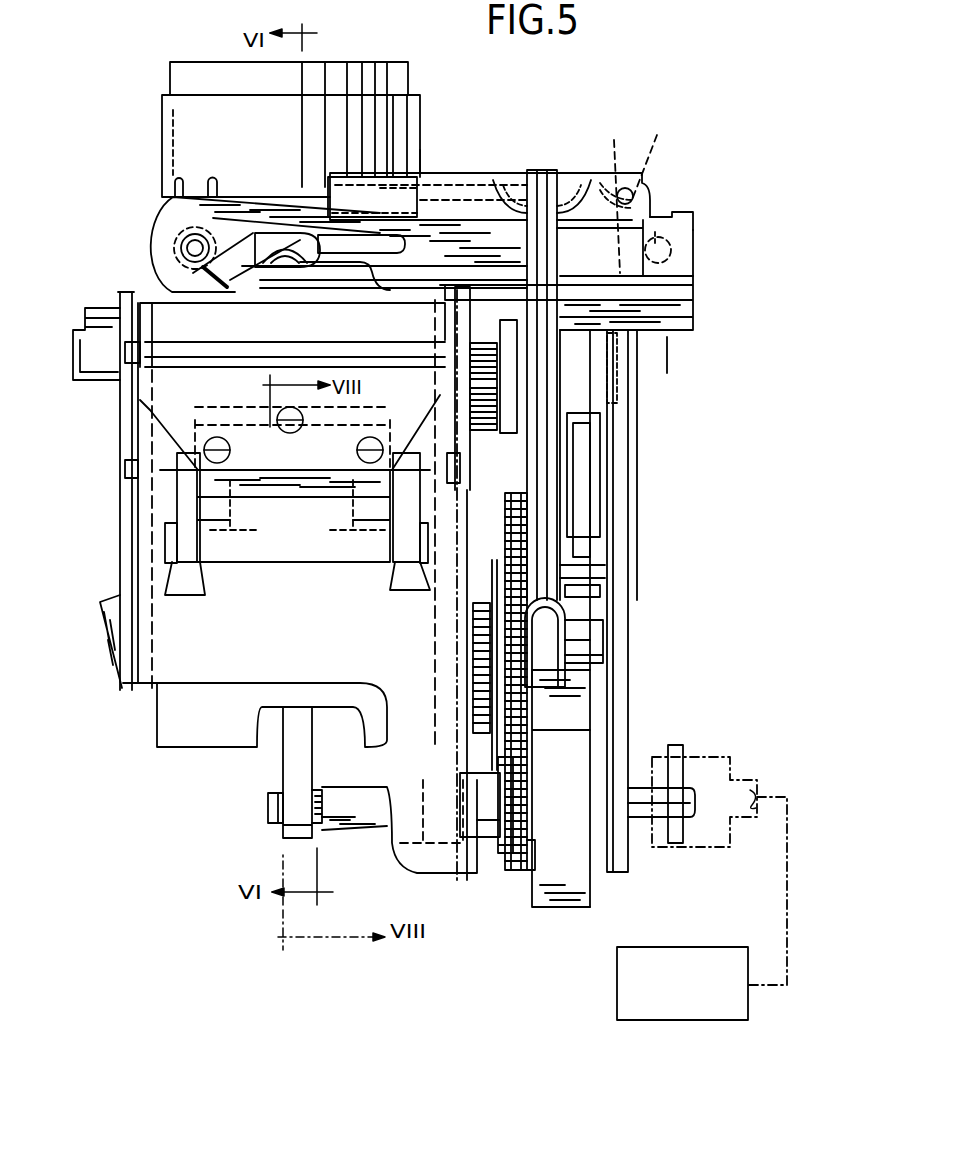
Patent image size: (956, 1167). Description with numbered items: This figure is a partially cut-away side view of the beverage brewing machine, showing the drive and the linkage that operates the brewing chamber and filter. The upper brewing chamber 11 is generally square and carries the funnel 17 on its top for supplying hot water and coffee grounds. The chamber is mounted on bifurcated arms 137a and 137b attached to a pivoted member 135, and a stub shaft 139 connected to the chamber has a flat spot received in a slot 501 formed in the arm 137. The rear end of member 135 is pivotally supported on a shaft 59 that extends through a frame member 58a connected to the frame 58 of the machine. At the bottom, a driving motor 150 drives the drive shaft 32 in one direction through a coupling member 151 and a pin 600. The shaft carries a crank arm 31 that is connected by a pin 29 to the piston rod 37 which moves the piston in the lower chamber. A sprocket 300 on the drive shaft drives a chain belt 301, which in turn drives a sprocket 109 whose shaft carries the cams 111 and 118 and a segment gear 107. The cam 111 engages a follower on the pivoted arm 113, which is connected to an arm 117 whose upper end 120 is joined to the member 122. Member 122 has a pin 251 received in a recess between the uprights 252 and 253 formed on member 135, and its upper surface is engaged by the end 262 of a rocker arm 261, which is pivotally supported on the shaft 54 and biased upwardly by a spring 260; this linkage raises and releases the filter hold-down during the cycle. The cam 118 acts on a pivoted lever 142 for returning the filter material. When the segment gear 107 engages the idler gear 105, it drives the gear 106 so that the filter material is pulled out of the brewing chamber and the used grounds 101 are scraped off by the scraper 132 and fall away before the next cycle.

The funnel 17 is at (388, 66).
The upper brewing chamber 11 is at (405, 110).
The end of rocker arm 262 is at (430, 157).
The member 122 is at (445, 182).
The arm 137 is at (492, 248).
The upper end of arm 117 120 is at (556, 192).
The upright 252 is at (613, 193).
The pin 251 is at (659, 169).
The upright 253 is at (642, 192).
The pivoted member 135 is at (610, 243).
The frame member 58a is at (690, 228).
The shaft 59 is at (665, 252).
The frame 58 is at (675, 300).
The bifurcated arm 137a is at (322, 243).
The rocker arm 261 is at (215, 207).
The stub shaft 139 is at (258, 233).
The shaft 54 is at (190, 248).
The spring 260 is at (233, 292).
The bifurcated arm 137b is at (308, 292).
The slot 501 is at (382, 292).
The scraper 132 is at (168, 413).
The gear 106 is at (497, 352).
The idler gear 105 is at (497, 388).
The pivoted lever 142 is at (595, 440).
The arm 117 is at (548, 480).
The cam 118 is at (587, 504).
The sprocket 109 is at (519, 531).
The cam 111 is at (562, 570).
The segment gear 107 is at (479, 628).
The arm 113 is at (547, 677).
The chain belt 301 is at (517, 712).
The drive shaft 32 is at (637, 795).
The pin 600 is at (683, 750).
The coupling member 151 is at (715, 757).
The grounds 101 is at (118, 648).
The piston rod 37 is at (295, 763).
The pin 29 is at (268, 806).
The crank arm 31 is at (358, 832).
The sprocket 300 is at (512, 870).
The driving motor 150 is at (662, 1006).